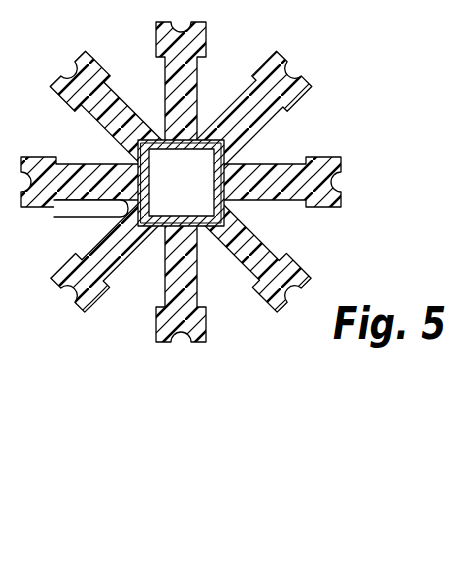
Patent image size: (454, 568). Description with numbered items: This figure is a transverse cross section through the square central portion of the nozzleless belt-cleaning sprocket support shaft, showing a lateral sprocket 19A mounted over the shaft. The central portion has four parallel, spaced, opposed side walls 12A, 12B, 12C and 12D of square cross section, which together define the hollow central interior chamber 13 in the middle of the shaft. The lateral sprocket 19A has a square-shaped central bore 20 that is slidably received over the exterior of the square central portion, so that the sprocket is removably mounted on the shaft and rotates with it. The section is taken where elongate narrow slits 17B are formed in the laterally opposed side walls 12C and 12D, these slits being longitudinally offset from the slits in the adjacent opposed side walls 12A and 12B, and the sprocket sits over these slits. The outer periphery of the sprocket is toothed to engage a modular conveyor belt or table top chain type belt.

The central interior chamber 13 is at (241, 183).
The side wall 12A is at (163, 126).
The side wall 12B is at (153, 238).
The side wall 12C is at (130, 158).
The side wall 12D is at (237, 157).
The lateral sprocket 19A is at (200, 83).
The square-shaped central bore 20 is at (203, 238).
The slit 17B is at (115, 206).